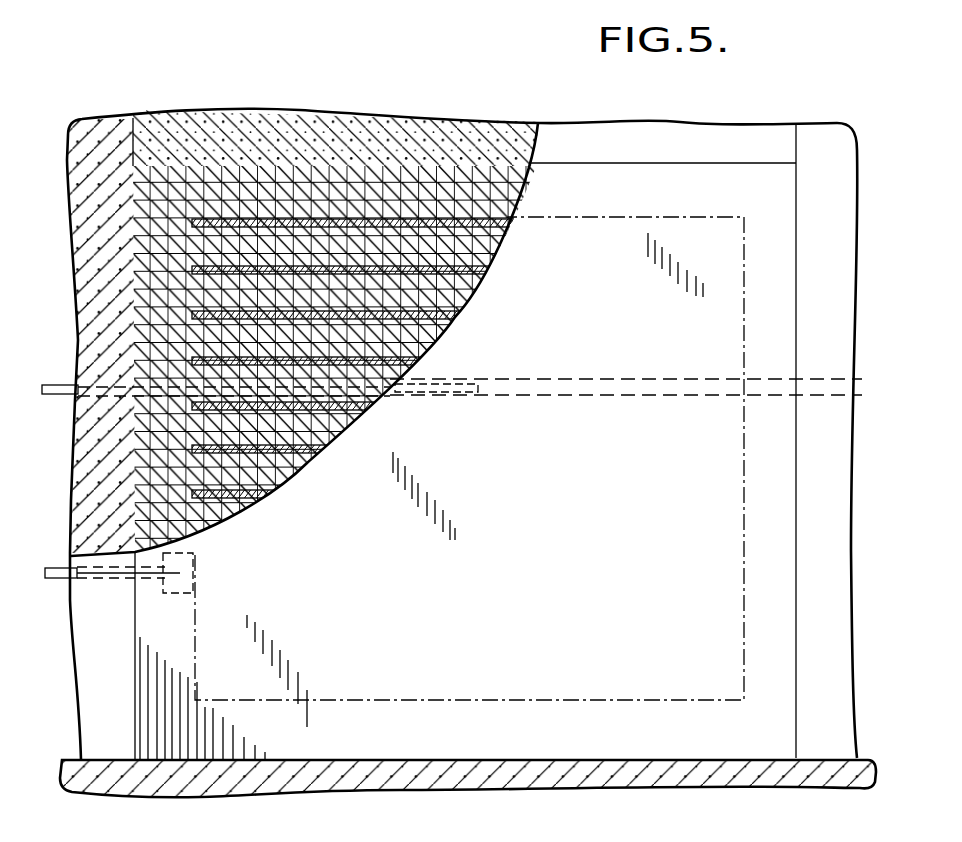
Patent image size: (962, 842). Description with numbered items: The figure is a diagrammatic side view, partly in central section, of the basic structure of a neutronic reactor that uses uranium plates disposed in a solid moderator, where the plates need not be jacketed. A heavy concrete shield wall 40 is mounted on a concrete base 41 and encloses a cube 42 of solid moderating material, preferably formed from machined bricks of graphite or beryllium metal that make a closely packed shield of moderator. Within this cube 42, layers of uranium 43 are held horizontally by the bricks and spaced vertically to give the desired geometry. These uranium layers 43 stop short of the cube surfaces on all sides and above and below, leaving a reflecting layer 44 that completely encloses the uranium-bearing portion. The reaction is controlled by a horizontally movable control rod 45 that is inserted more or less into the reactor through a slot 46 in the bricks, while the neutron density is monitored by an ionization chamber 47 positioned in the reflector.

The concrete shield wall 40 is at (835, 518).
The concrete base 41 is at (868, 766).
The cube of solid moderating material 42 is at (343, 190).
The layers of uranium 43 is at (292, 260).
The reflecting layer 44 is at (437, 188).
The control rod 45 is at (50, 385).
The slot 46 is at (610, 378).
The ionization chamber 47 is at (176, 596).